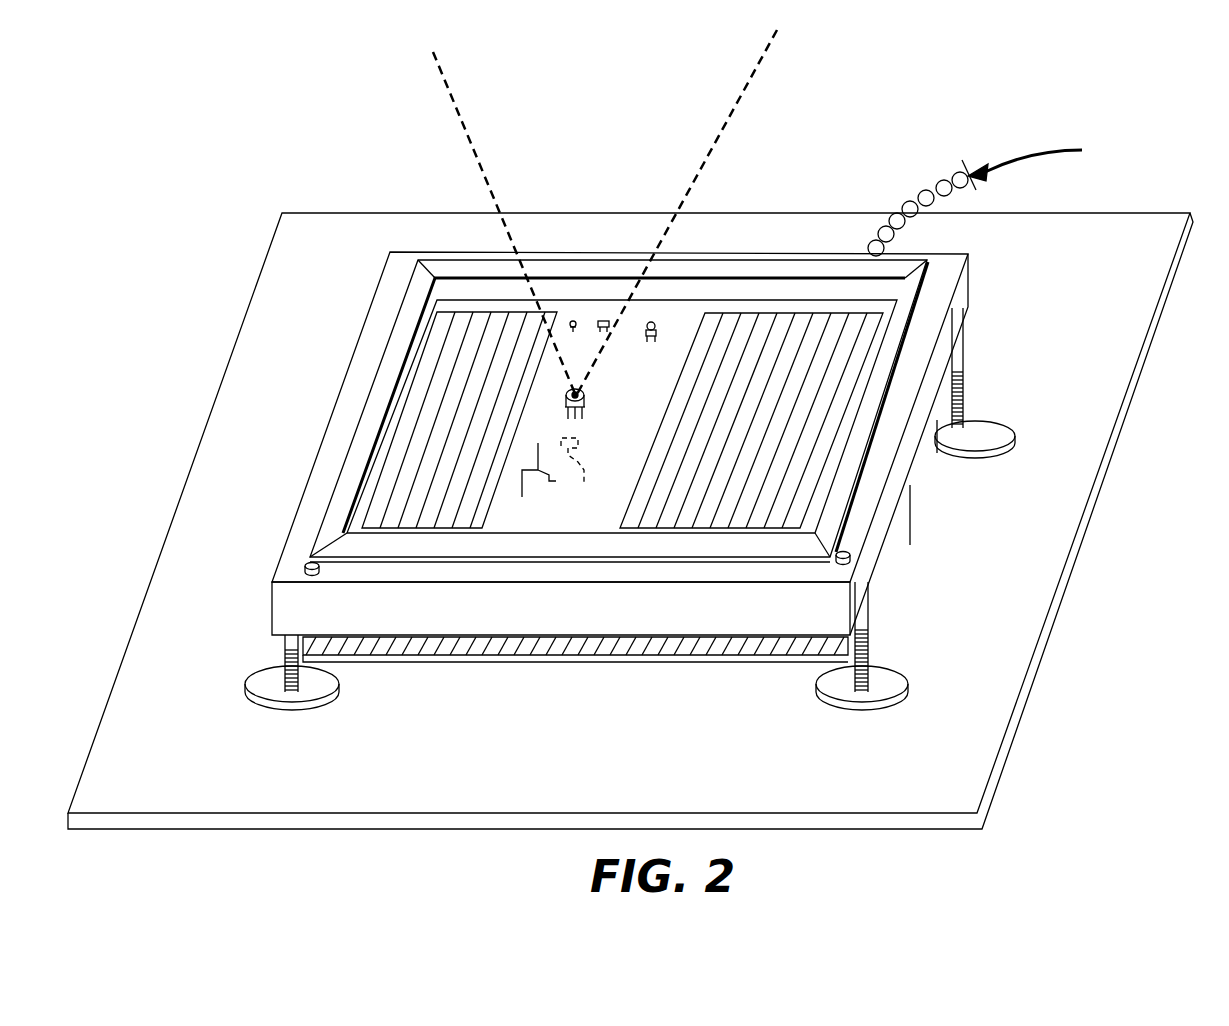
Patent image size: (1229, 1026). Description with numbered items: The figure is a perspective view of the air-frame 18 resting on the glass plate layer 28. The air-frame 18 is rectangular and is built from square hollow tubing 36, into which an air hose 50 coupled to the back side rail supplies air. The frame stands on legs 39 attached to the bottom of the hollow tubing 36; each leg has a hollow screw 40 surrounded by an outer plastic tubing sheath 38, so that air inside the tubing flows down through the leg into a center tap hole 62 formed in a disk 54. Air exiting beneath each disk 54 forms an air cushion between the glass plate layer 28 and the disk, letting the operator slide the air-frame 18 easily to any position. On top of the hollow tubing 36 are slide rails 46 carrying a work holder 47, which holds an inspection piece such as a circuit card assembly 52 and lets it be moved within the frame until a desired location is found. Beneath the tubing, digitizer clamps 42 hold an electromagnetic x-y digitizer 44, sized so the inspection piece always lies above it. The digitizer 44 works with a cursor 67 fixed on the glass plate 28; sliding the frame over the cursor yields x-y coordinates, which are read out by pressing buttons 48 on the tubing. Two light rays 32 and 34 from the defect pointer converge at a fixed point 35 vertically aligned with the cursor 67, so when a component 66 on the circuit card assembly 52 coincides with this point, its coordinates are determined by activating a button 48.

The air-frame 18 is at (350, 318).
The glass plate layer 28 is at (1147, 216).
The light ray 32 is at (468, 126).
The light ray 34 is at (712, 143).
The fixed point 35 is at (576, 389).
The hollow tubing 36 is at (660, 403).
The tubing sheath 38 is at (963, 355).
The legs 39 is at (238, 665).
The hollow screw 40 is at (964, 393).
The digitizer clamps 42 is at (917, 503).
The x-y digitizer 44 is at (628, 656).
The slide rails 46 is at (462, 265).
The work holder 47 is at (688, 297).
The buttons 48 is at (308, 565).
The air hose 50 is at (912, 188).
The circuit card assembly 52 is at (632, 408).
The disk 54 is at (983, 428).
The center tap hole 62 is at (880, 688).
The component 66 is at (585, 398).
The digitizer cursor 67 is at (563, 475).